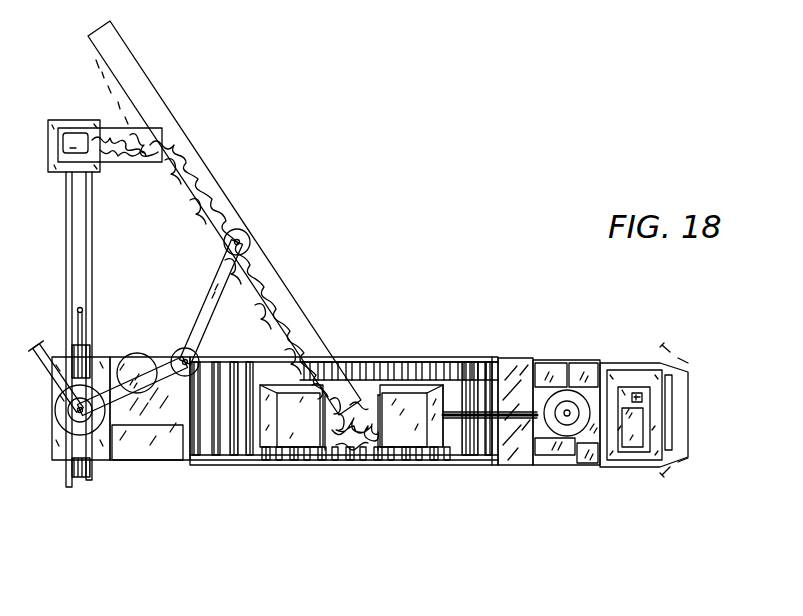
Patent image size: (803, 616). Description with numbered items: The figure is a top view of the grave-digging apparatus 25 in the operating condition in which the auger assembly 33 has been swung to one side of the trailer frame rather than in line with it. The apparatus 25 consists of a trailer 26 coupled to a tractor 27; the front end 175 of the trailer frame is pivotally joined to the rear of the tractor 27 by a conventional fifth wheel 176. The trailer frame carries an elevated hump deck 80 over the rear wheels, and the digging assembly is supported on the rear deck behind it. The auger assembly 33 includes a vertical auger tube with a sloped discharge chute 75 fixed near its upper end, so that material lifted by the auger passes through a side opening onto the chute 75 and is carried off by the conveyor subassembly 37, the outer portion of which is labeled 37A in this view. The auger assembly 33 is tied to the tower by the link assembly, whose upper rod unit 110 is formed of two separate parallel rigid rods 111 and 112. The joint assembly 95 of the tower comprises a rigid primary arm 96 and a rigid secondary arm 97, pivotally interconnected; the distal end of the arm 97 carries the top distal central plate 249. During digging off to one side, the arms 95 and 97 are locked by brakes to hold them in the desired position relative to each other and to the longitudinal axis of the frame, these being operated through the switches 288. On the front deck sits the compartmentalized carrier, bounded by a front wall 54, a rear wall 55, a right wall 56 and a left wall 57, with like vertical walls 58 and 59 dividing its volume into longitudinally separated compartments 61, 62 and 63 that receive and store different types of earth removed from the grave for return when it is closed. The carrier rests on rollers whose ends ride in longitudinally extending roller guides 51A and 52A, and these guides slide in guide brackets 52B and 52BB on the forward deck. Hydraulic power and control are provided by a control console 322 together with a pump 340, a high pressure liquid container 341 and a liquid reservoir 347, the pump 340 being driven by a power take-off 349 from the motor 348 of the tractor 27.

The apparatus 25 is at (492, 305).
The trailer 26 is at (496, 522).
The tractor 27 is at (628, 517).
The auger assembly 33 is at (55, 110).
The conveyor subassembly 37 is at (236, 215).
The upper chute portion 37A is at (102, 52).
The discharge chute 75 is at (138, 160).
The hump deck 80 is at (173, 418).
The joint assembly 95 is at (175, 302).
The primary arm 96 is at (157, 360).
The secondary arm 97 is at (207, 315).
The upper rod unit 110 is at (65, 228).
The rod 111 is at (72, 287).
The rod 112 is at (90, 262).
The front end 175 is at (543, 460).
The fifth wheel 176 is at (580, 397).
The top distal central plate 249 is at (104, 362).
The switches 288 is at (643, 397).
The control console 322 is at (123, 445).
The pump 340 is at (540, 455).
The high pressure liquid container 341 is at (545, 363).
The liquid reservoir 347 is at (583, 363).
The tractor motor 348 is at (647, 434).
The power take-off 349 is at (577, 450).
The roller guide 51A is at (247, 462).
The roller guide 52A is at (365, 360).
The guide bracket 52B is at (337, 357).
The guide bracket 52BB is at (262, 460).
The front wall 54 is at (452, 420).
The rear wall 55 is at (277, 412).
The right wall 56 is at (407, 360).
The left wall 57 is at (307, 447).
The vertical wall 58 is at (323, 453).
The vertical wall 59 is at (385, 432).
The compartment 61 is at (302, 435).
The compartment 62 is at (380, 430).
The compartment 63 is at (413, 438).